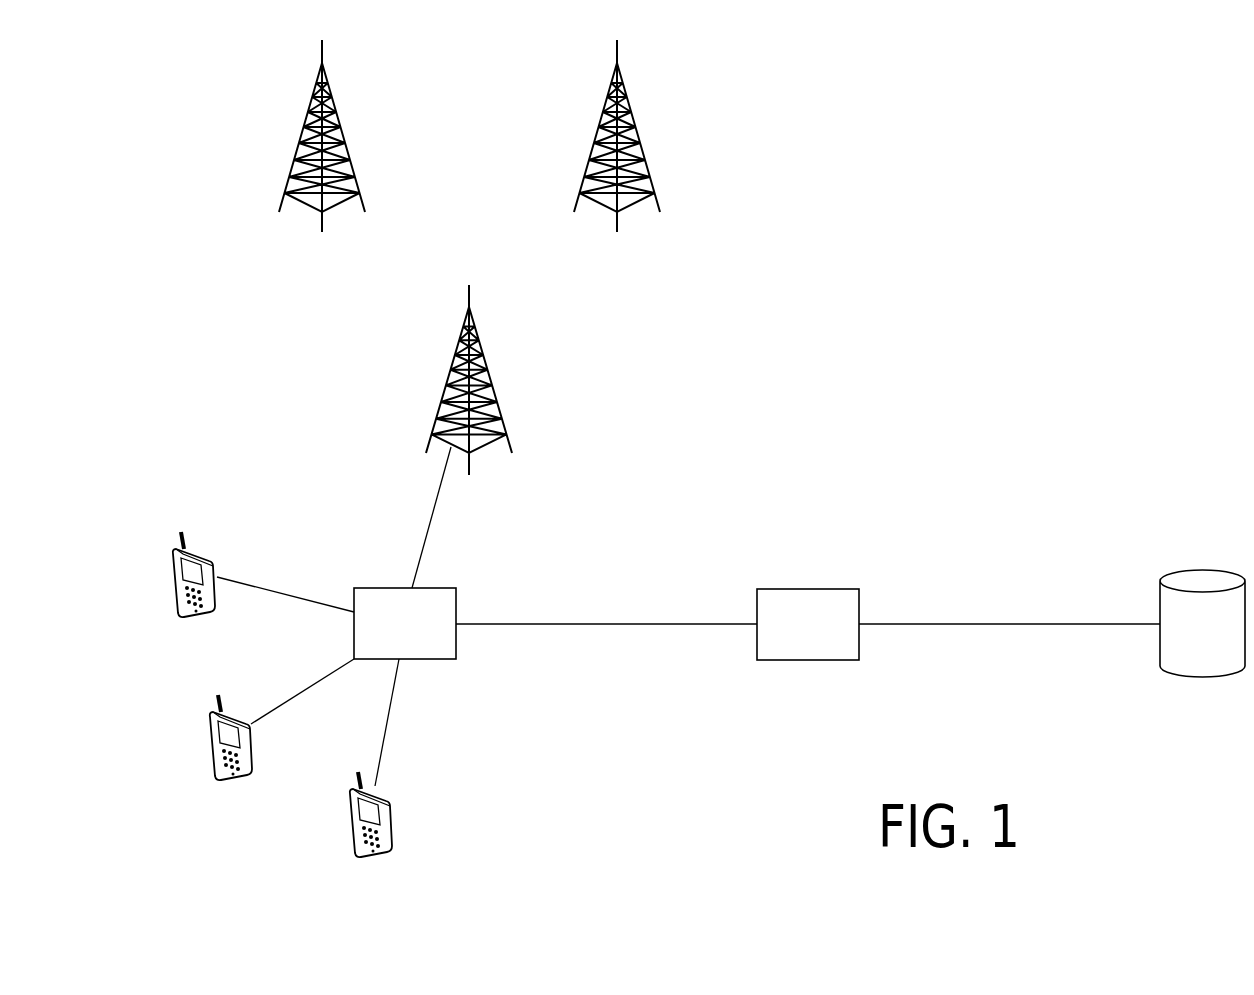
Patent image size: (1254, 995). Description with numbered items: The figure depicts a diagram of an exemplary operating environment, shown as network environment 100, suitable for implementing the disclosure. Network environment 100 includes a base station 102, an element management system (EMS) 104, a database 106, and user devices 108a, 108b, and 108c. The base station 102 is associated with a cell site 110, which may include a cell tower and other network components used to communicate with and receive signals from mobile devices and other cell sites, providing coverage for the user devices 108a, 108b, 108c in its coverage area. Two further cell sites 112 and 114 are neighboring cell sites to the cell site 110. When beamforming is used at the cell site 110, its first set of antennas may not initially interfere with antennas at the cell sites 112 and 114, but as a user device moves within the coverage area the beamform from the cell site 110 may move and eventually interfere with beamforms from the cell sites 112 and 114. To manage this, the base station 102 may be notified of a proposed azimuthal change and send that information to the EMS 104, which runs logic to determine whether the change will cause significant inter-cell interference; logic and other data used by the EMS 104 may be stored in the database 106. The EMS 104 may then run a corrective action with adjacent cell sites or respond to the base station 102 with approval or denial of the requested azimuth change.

The network environment 100 is at (1008, 213).
The base station 102 is at (435, 659).
The element management system 104 is at (800, 589).
The database 106 is at (1183, 570).
The user device 108a is at (172, 571).
The user device 108b is at (210, 738).
The user device 108c is at (350, 816).
The cell site 110 is at (450, 377).
The cell site 112 is at (299, 141).
The cell site 114 is at (595, 141).